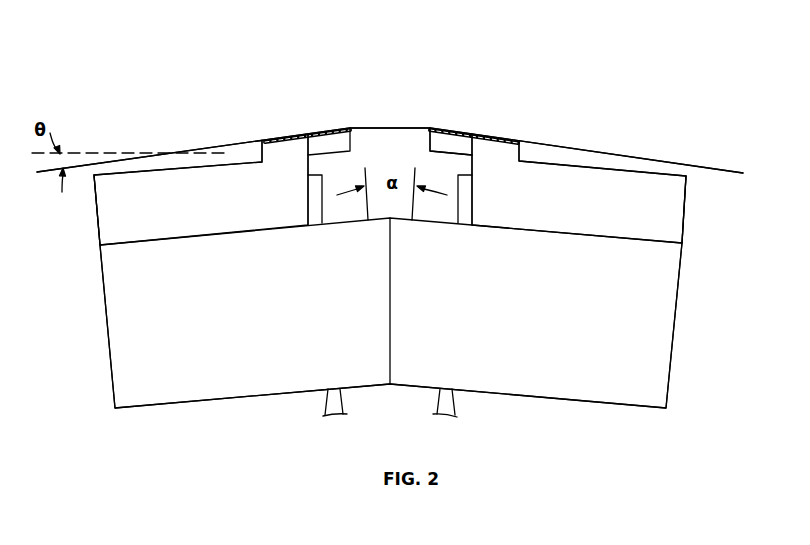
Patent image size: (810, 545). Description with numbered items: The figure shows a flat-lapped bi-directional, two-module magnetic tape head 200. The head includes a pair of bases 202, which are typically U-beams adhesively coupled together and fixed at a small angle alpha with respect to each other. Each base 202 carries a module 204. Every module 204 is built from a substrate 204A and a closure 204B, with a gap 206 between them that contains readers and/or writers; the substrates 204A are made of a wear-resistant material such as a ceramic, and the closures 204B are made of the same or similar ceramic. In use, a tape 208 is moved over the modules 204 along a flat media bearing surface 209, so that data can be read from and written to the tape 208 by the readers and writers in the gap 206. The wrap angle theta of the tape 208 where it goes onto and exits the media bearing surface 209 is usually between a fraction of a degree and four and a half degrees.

The two-module magnetic tape head 200 is at (140, 98).
The base 202 is at (103, 305).
The module 204 is at (97, 217).
The substrate 204A is at (152, 196).
The closure 204B is at (427, 147).
The gap 206 is at (305, 124).
The tape 208 is at (607, 150).
The media bearing surface 209 is at (283, 126).